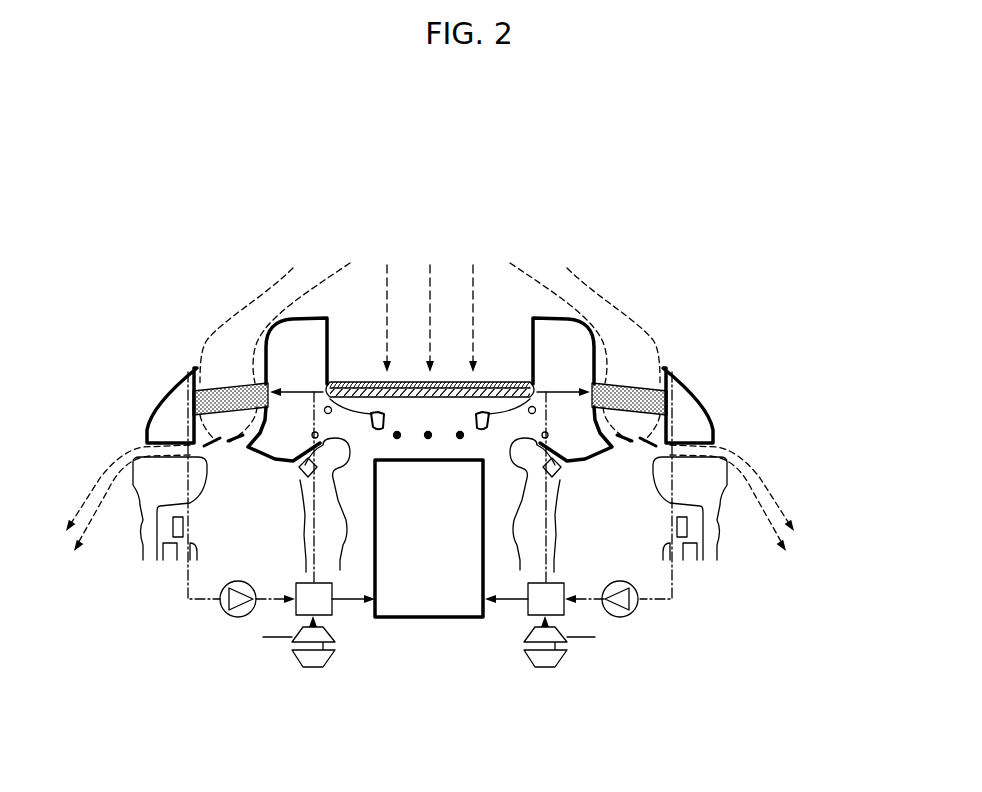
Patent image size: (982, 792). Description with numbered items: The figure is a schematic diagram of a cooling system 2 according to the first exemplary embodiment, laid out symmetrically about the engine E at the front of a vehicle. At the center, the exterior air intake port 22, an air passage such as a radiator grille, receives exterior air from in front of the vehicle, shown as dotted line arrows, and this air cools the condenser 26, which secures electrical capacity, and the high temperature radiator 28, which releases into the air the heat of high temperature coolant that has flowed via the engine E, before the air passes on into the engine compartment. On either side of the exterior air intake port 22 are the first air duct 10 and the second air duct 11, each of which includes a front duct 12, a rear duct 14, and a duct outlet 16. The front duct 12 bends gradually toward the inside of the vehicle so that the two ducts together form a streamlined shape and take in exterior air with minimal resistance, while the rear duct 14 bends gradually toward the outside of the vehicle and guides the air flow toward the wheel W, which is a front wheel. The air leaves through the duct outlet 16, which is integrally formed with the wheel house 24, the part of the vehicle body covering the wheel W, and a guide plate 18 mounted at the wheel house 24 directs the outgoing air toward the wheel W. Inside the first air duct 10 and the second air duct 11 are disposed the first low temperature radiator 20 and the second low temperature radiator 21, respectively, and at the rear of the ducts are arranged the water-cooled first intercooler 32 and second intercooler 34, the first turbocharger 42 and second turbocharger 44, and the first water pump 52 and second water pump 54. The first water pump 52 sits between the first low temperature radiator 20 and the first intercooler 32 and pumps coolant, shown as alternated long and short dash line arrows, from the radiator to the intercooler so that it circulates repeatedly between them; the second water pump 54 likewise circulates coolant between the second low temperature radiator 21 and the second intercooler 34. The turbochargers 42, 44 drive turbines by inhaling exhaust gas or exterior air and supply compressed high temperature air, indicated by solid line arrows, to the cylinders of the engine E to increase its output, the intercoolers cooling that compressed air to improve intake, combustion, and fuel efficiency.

The cooling system 2 is at (650, 282).
The first air duct 10 is at (265, 428).
The second air duct 11 is at (665, 372).
The front duct 12 is at (631, 374).
The rear duct 14 is at (235, 430).
The duct outlet 16 is at (616, 455).
The guide plate 18 is at (640, 440).
The first low temperature radiator 20 is at (185, 375).
The second low temperature radiator 21 is at (637, 378).
The exterior air intake port 22 is at (417, 332).
The wheel house 24 is at (145, 435).
The condenser 26 is at (496, 370).
The high temperature radiator 28 is at (367, 370).
The first intercooler 32 is at (292, 612).
The second intercooler 34 is at (527, 612).
The first turbocharger 42 is at (313, 668).
The second turbocharger 44 is at (545, 668).
The first water pump 52 is at (222, 612).
The second water pump 54 is at (635, 612).
The engine E is at (390, 617).
The wheel W is at (167, 480).